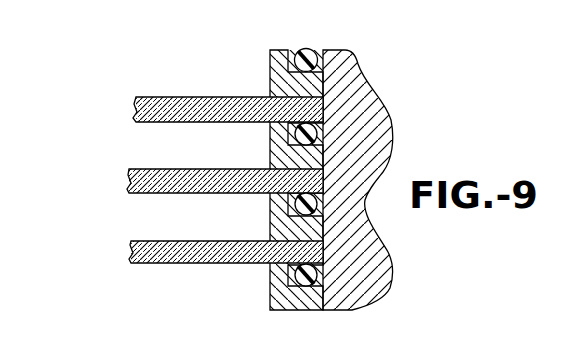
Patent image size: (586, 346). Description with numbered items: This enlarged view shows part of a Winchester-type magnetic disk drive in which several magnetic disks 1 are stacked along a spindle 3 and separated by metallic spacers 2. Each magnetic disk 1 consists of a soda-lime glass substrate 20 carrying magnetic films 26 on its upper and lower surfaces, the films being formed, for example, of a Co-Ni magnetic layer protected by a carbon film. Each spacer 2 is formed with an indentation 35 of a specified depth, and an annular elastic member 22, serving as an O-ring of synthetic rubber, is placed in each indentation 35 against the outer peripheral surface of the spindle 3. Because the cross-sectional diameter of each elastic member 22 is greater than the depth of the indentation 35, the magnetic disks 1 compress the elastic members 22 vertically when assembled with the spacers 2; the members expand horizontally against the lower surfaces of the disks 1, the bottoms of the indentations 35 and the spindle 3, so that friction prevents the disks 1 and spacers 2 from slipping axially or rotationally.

The magnetic disk 1 is at (122, 76).
The metallic spacer 2 is at (270, 68).
The spindle 3 is at (345, 306).
The substrate 20 is at (135, 103).
The annular elastic member 22 is at (318, 60).
The magnetic film 26 is at (172, 97).
The indentation 35 is at (292, 50).